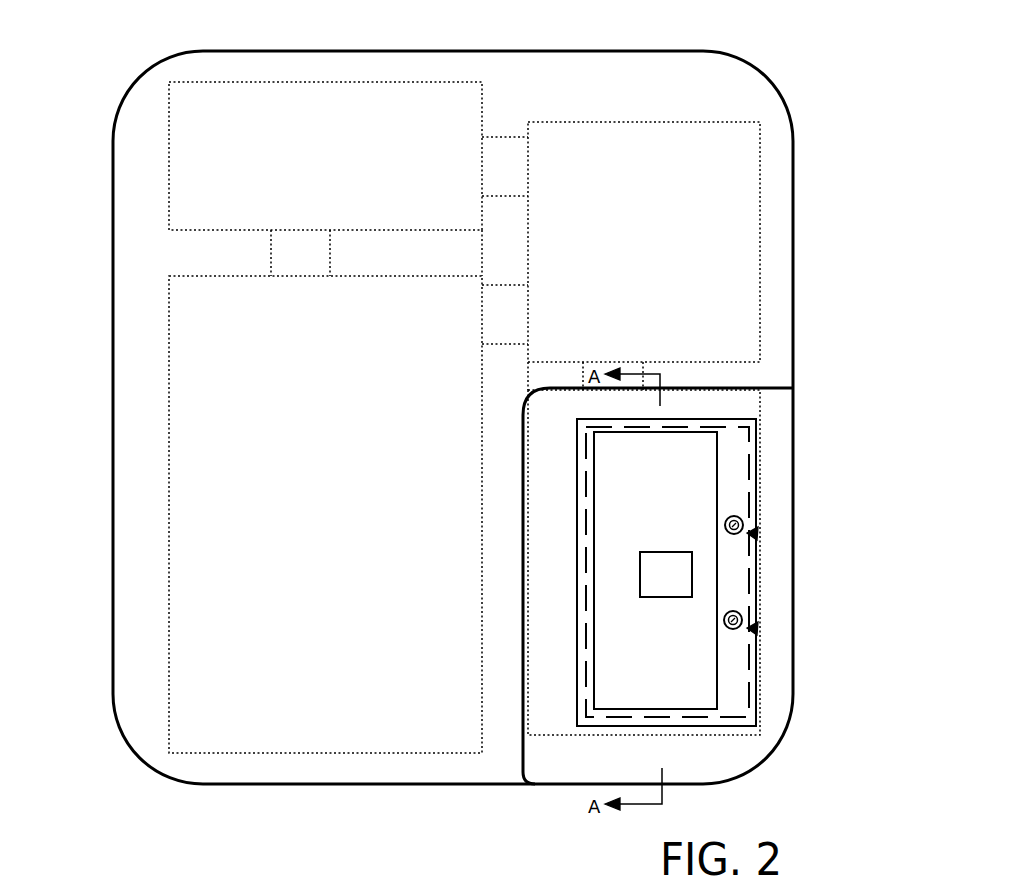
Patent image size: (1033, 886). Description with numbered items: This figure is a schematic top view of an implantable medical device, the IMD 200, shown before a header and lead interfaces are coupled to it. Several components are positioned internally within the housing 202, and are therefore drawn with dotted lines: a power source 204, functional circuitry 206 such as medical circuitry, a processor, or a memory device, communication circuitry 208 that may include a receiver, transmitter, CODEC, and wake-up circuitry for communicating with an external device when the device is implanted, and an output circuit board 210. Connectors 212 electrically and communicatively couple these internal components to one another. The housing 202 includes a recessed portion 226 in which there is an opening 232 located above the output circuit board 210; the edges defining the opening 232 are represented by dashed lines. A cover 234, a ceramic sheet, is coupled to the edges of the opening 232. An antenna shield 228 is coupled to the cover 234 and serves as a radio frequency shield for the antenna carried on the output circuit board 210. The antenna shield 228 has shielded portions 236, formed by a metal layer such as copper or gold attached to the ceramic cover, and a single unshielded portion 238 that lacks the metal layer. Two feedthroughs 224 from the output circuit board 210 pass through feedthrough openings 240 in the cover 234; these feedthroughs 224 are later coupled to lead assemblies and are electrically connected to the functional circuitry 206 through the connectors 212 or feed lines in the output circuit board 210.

The IMD 200 is at (130, 68).
The housing 202 is at (706, 88).
The power source 204 is at (341, 525).
The functional circuitry 206 is at (341, 165).
The communication circuitry 208 is at (659, 253).
The output circuit board 210 is at (560, 737).
The connectors 212 is at (331, 258).
The feedthroughs 224 is at (742, 517).
The recessed portion 226 is at (740, 768).
The antenna shield 228 is at (718, 477).
The opening 232 is at (751, 713).
The cover 234 is at (583, 518).
The shielded portions 236 is at (643, 490).
The unshielded portion 238 is at (682, 585).
The feedthrough openings 240 is at (756, 534).